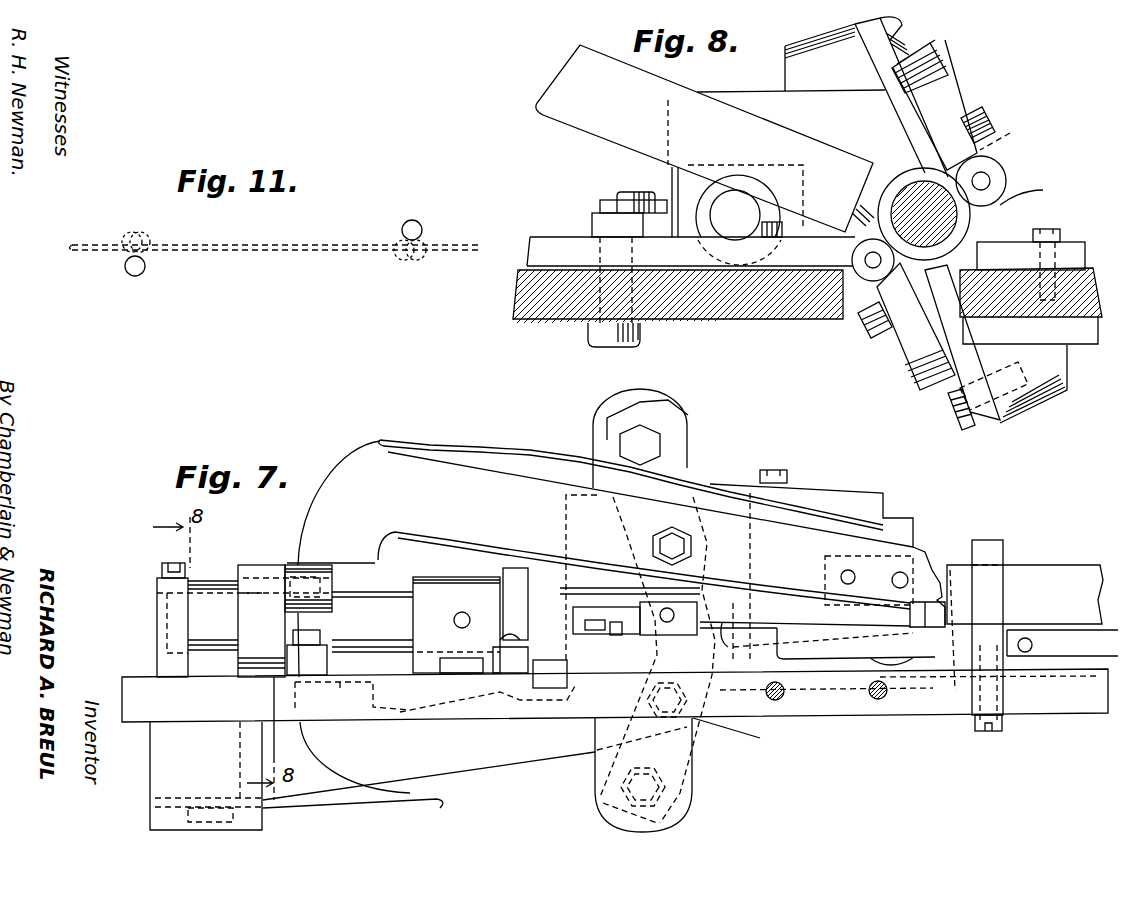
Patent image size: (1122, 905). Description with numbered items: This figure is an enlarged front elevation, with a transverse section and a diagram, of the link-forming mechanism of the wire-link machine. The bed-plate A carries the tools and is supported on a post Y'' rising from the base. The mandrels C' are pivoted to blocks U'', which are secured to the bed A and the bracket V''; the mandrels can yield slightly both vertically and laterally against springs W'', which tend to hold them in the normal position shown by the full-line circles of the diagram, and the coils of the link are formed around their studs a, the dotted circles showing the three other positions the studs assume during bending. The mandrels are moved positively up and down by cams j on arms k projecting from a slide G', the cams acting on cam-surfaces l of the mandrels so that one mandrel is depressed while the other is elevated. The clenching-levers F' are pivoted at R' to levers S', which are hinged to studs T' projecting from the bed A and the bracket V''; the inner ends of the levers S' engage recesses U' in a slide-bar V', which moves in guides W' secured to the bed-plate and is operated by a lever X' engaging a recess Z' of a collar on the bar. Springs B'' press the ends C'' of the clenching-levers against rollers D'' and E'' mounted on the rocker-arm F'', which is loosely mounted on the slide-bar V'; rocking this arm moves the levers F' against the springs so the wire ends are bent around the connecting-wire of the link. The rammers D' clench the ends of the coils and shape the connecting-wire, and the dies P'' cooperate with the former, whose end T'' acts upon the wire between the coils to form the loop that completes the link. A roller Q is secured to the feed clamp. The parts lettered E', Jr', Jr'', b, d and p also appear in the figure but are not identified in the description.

In FIG. 8, the bed-plate A is at (733, 312).
In FIG. 7, the bed-plate A is at (513, 707).
In FIG. 8, the springs B'' is at (928, 54).
In FIG. 7, the springs B'' is at (588, 622).
In FIG. 7, the mandrels C' is at (822, 614).
In FIG. 8, the ends of the clenching-levers C'' is at (786, 183).
In FIG. 7, the ends of the clenching-levers C'' is at (348, 624).
In FIG. 7, the rammers D' is at (1025, 594).
In FIG. 8, the roller D'' is at (1007, 180).
In FIG. 7, the roller D'' is at (293, 573).
In FIG. 8, the bushing E' is at (739, 220).
In FIG. 8, the roller E'' is at (710, 259).
In FIG. 8, the clenching-levers F' is at (948, 225).
In FIG. 7, the clenching-levers F' is at (836, 619).
In FIG. 8, the rocker-arm F'' is at (1034, 191).
In FIG. 7, the rocker-arm F'' is at (284, 621).
In FIG. 7, the slide G' is at (1062, 667).
In FIG. 7, the block Jr' is at (572, 682).
In FIG. 7, the block Jr'' is at (948, 694).
In FIG. 7, the dies P'' is at (911, 506).
In FIG. 7, the roller Q is at (782, 702).
In FIG. 8, the pivot R' is at (928, 238).
In FIG. 7, the pivot R' is at (680, 495).
In FIG. 8, the levers S' is at (938, 281).
In FIG. 7, the levers S' is at (716, 585).
In FIG. 8, the studs T' is at (926, 239).
In FIG. 7, the studs T' is at (640, 585).
In FIG. 7, the end of the former T'' is at (784, 686).
In FIG. 8, the recesses U' is at (931, 203).
In FIG. 7, the recesses U' is at (729, 680).
In FIG. 7, the blocks U'' is at (667, 696).
In FIG. 7, the slide-bar V' is at (387, 619).
In FIG. 8, the bracket V'' is at (791, 87).
In FIG. 7, the bracket V'' is at (811, 504).
In FIG. 7, the guides W' is at (332, 595).
In FIG. 7, the springs W'' is at (620, 611).
In FIG. 7, the lever X' is at (454, 678).
In FIG. 7, the post Y'' is at (206, 776).
In FIG. 7, the recess Z' is at (456, 625).
In FIG. 11, the studs a is at (432, 210).
In FIG. 7, the studs a is at (938, 690).
In FIG. 7, the hole b is at (1042, 652).
In FIG. 7, the lug d is at (738, 640).
In FIG. 7, the cams j is at (717, 639).
In FIG. 7, the arms k is at (857, 660).
In FIG. 7, the cam-surfaces l is at (826, 620).
In FIG. 7, the holes p is at (869, 580).